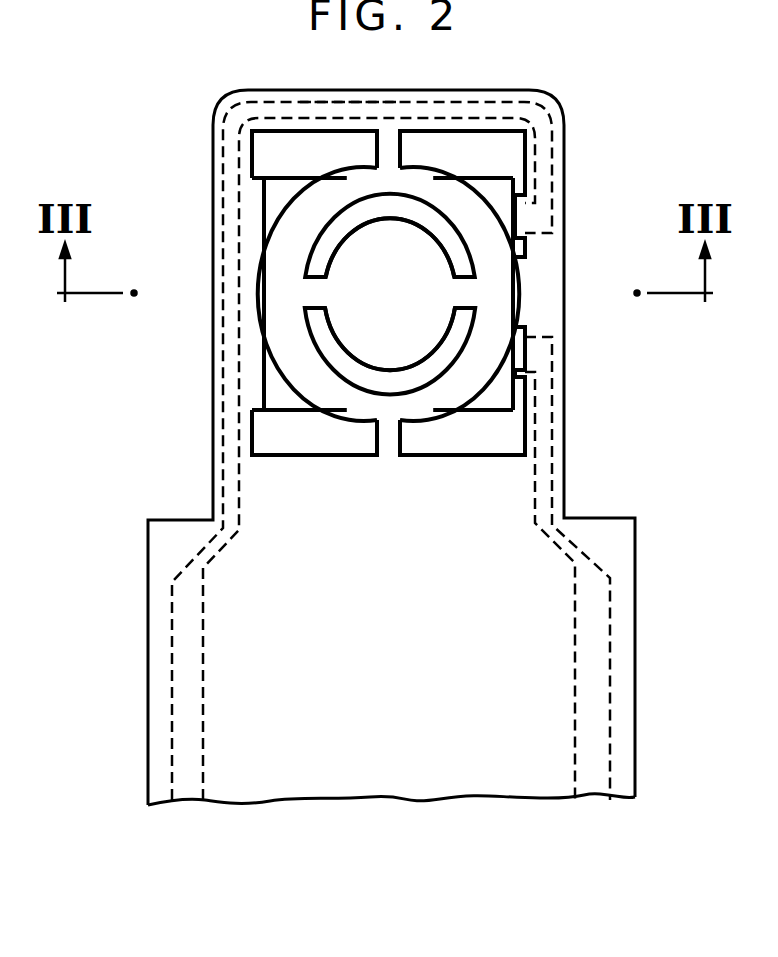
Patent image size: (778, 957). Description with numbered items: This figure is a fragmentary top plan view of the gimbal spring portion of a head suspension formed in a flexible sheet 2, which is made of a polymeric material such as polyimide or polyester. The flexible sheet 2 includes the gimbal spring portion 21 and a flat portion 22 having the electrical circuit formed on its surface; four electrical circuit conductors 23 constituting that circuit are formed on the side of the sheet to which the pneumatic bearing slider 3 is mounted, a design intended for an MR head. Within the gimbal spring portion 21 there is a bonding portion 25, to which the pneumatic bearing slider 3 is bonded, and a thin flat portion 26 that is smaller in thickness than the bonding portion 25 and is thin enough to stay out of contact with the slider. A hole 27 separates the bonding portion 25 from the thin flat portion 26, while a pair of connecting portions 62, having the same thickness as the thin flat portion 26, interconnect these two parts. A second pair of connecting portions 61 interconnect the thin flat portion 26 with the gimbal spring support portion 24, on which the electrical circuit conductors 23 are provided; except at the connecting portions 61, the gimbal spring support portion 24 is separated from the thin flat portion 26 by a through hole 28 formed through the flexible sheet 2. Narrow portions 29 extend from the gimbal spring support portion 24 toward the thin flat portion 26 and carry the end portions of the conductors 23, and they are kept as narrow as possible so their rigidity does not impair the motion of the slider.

The flexible sheet 2 is at (641, 709).
The pneumatic bearing slider 3 is at (275, 203).
The gimbal spring portion 21 is at (430, 147).
The flat portion 22 is at (443, 790).
The electrical circuit conductors 23 is at (172, 806).
The gimbal spring support portion 24 is at (344, 112).
The bonding portion 25 is at (372, 277).
The thin flat portion 26 is at (487, 260).
The hole 27 is at (437, 225).
The through hole 28 is at (450, 165).
The narrow portions 29 is at (520, 220).
The connecting portions 61 is at (388, 140).
The connecting portions 62 is at (312, 295).